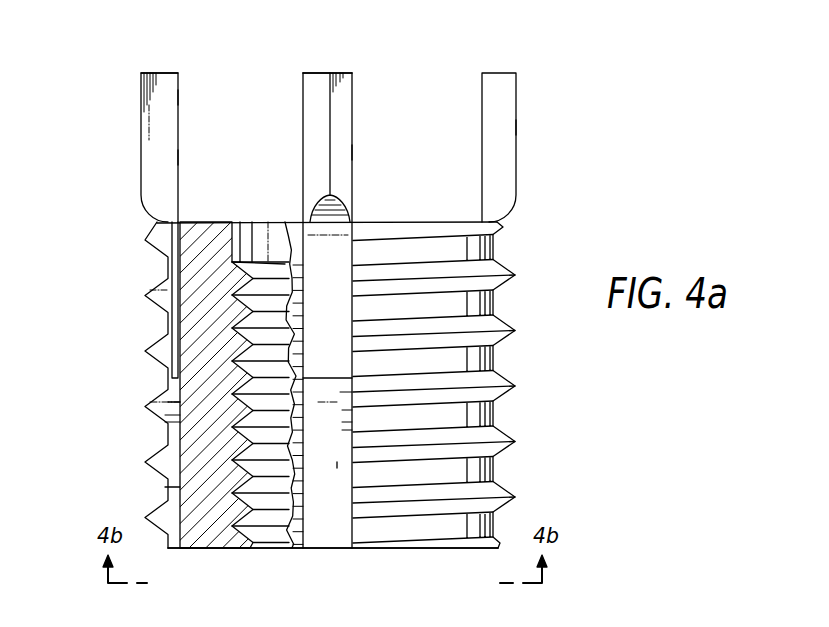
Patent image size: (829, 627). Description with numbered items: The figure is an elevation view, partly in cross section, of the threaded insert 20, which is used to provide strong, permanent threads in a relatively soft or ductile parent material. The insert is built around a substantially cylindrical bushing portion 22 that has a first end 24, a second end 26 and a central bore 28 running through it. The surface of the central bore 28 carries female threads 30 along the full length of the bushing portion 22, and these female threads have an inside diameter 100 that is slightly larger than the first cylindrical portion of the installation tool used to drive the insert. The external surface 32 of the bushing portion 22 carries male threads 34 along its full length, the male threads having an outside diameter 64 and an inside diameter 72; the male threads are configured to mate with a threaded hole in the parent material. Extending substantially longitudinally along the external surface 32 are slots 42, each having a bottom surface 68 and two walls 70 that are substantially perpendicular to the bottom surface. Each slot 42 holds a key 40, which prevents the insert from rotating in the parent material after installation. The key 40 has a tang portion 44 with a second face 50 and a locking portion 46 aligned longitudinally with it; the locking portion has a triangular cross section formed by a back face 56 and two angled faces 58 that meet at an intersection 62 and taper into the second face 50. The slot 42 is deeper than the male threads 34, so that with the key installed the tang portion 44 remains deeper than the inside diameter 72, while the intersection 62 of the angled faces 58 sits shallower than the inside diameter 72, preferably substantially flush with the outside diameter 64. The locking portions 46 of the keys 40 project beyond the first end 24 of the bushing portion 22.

The threaded insert 20 is at (556, 242).
The bushing portion 22 is at (202, 549).
The first end 24 is at (445, 222).
The second end 26 is at (452, 549).
The central bore 28 is at (237, 236).
The female threads 30 is at (240, 480).
The external surface 32 is at (162, 403).
The male threads 34 is at (152, 338).
The key 40 is at (141, 90).
The slot 42 is at (165, 462).
The tang portion 44 is at (312, 243).
The locking portion 46 is at (178, 160).
The second face 50 is at (342, 253).
The back face 56 is at (178, 97).
The angled faces 58 is at (166, 80).
The intersection 62 is at (141, 125).
The outside diameter 64 is at (160, 290).
The bottom surface 68 is at (175, 490).
The walls 70 is at (160, 398).
The inside diameter 72 is at (167, 266).
The inside diameter 100 is at (255, 434).